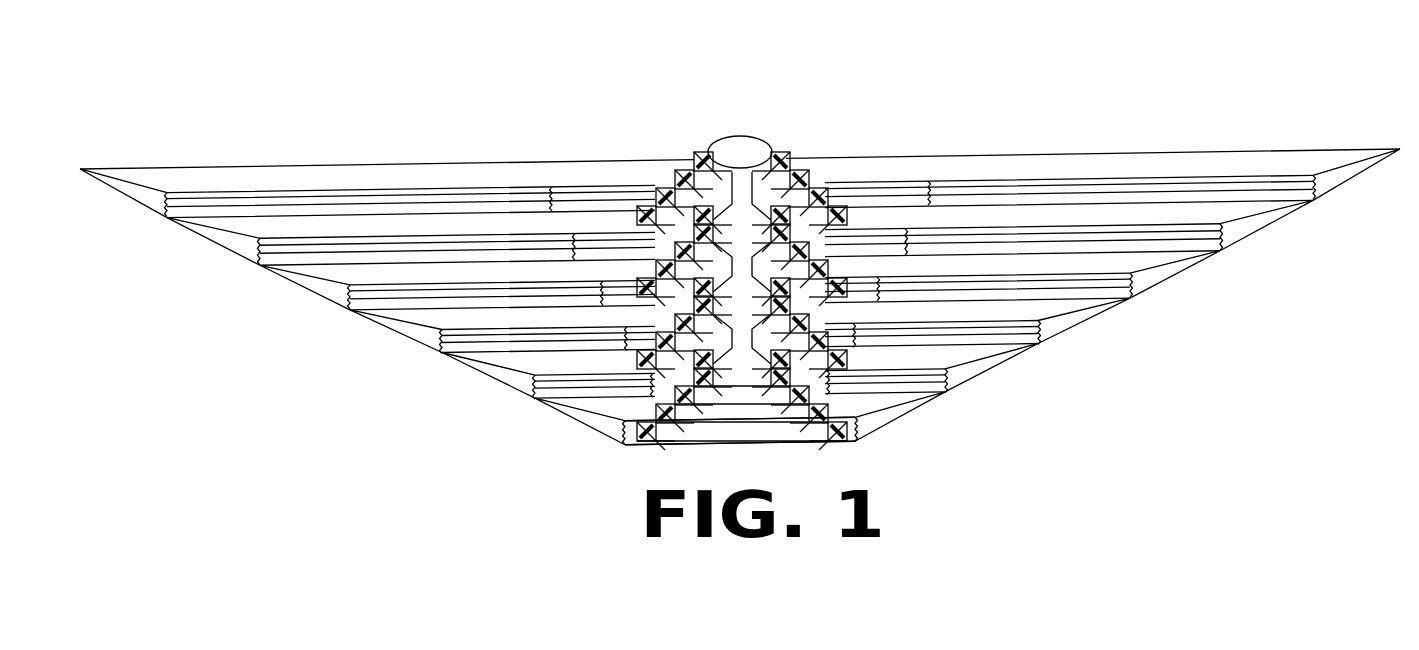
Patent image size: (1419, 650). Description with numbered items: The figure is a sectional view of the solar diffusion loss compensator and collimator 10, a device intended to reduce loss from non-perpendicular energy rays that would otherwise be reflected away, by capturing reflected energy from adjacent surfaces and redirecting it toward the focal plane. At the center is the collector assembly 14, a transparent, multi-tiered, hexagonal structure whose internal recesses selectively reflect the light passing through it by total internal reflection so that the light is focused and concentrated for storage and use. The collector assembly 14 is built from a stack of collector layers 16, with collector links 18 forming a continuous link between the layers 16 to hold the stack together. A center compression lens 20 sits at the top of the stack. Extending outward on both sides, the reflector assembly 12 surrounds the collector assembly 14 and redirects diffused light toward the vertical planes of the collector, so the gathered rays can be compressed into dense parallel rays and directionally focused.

The solar diffusion loss compensator and collimator 10 is at (638, 124).
The reflector assembly 12 is at (992, 374).
The collector assembly 14 is at (632, 419).
The collector layer 16 is at (812, 187).
The collector link 18 is at (650, 350).
The center compression lens 20 is at (745, 147).